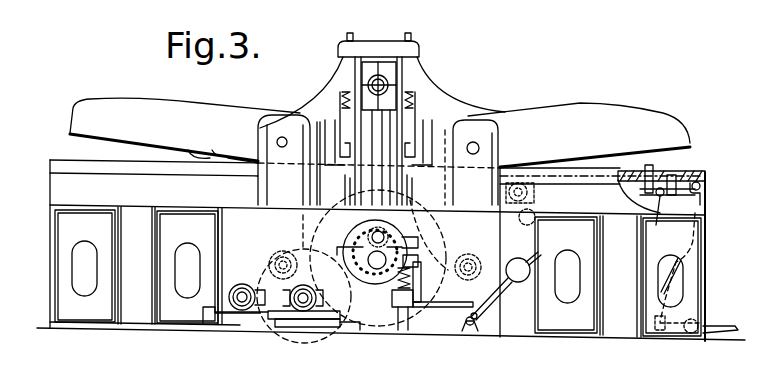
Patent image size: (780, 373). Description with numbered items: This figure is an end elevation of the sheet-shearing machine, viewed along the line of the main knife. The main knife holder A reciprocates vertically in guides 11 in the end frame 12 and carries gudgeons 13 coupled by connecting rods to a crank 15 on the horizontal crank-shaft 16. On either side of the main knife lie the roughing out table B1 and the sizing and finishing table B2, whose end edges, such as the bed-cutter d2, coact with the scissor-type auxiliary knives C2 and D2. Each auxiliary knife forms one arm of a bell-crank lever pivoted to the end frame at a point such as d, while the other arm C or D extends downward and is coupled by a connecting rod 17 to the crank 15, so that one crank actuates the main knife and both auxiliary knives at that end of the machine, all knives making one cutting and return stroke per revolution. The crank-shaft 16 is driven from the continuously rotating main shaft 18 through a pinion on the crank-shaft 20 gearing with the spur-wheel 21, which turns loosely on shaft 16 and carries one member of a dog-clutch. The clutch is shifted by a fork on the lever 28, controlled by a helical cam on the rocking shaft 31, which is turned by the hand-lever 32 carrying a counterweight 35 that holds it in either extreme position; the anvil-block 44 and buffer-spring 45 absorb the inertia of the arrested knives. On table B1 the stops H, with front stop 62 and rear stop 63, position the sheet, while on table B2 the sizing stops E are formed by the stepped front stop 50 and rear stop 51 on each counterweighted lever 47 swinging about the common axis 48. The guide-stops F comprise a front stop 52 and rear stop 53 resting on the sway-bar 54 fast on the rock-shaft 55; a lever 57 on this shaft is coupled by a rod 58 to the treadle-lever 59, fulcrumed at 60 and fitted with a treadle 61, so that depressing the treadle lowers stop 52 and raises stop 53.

The roughing out table B1 is at (62, 158).
The sizing and finishing table B2 is at (697, 171).
The auxiliary knife C2 is at (104, 170).
The auxiliary knife D2 is at (612, 114).
The bell-crank lever arm C is at (282, 138).
The bell-crank lever arm D is at (490, 243).
The pivot d is at (473, 143).
The end edge bed-cutter d2 is at (588, 180).
The main knife holder A is at (388, 127).
The sizing stops E is at (550, 168).
The guide-stops F is at (661, 175).
The stops H is at (190, 155).
The guides 11 is at (397, 138).
The end frame 12 is at (344, 82).
The gudgeons 13 is at (392, 84).
The crank 15 is at (368, 232).
The crank-shaft 16 is at (372, 272).
The connecting rod 17 is at (318, 252).
The main or driving shaft 18 is at (241, 291).
The crank-shaft 20 is at (312, 292).
The spur-wheel 21 is at (350, 190).
The lever 28 is at (406, 316).
The rocking shaft 31 is at (480, 323).
The hand-lever 32 is at (476, 312).
The counterweight 35 is at (506, 286).
The anvil-block 44 is at (402, 310).
The buffer-spring 45 is at (418, 283).
The counterweighted lever 47 is at (531, 212).
The common axis 48 is at (528, 193).
The front stop 50 is at (502, 167).
The rear stop 51 is at (537, 165).
The front guide-stop 52 is at (645, 172).
The rear guide-stop 53 is at (672, 176).
The sway-bar 54 is at (645, 195).
The rock-shaft 55 is at (659, 215).
The lever 57 is at (703, 189).
The rod 58 is at (690, 250).
The treadle-lever 59 is at (677, 315).
The fulcrum 60 is at (702, 318).
The treadle 61 is at (738, 322).
The front stop 62 is at (243, 151).
The rear stop 63 is at (216, 153).